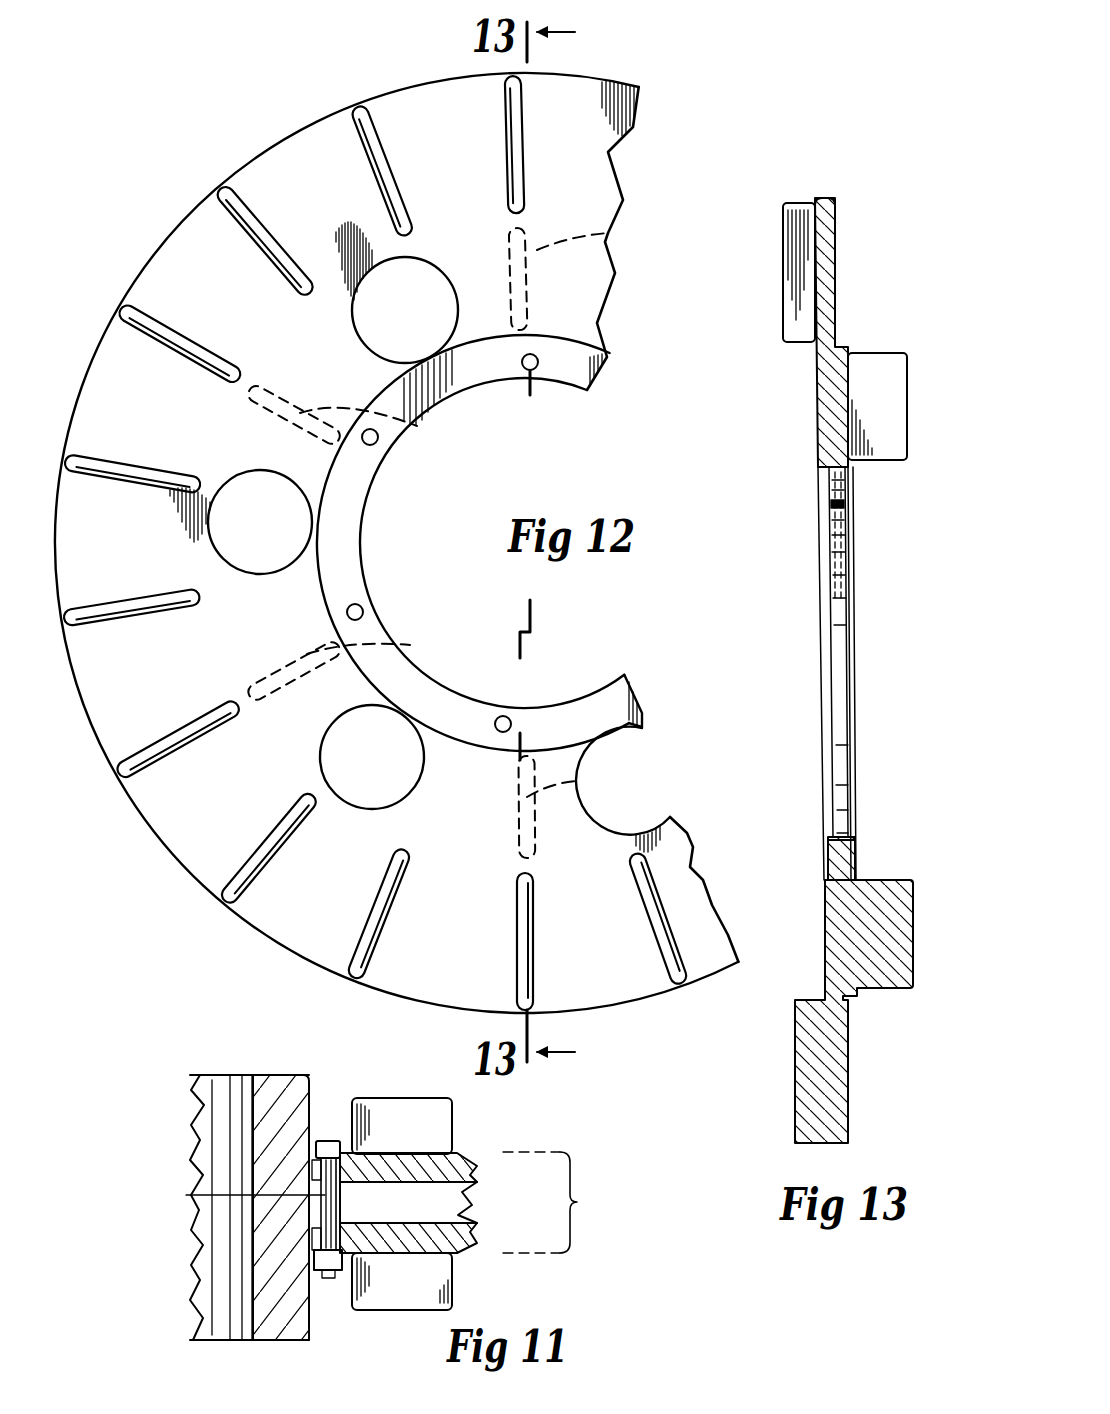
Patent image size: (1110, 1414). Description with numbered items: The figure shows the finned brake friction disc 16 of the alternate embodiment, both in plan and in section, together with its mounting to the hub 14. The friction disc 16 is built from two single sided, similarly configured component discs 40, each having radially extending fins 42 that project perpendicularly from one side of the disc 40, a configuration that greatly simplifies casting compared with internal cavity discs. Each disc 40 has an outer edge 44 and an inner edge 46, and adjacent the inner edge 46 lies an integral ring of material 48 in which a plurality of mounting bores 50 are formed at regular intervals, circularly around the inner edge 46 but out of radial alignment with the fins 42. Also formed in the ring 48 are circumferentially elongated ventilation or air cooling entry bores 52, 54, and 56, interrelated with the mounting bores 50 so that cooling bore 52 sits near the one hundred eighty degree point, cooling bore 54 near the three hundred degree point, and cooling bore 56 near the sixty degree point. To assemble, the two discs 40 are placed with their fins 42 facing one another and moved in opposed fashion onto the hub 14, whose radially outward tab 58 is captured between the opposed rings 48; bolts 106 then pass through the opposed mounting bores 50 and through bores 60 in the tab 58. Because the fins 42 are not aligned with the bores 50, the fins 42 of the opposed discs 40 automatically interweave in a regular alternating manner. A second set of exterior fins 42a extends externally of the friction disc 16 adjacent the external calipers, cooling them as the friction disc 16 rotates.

In FIG. 11, the hub 14 is at (273, 1073).
In FIG. 11, the brake friction disc 16 is at (585, 1202).
In FIG. 12, the component disc 40 is at (268, 128).
In FIG. 13, the component disc 40 is at (857, 181).
In FIG. 12, the fins 42 is at (384, 86).
In FIG. 13, the fins 42 is at (790, 273).
In FIG. 11, the fins 42 is at (480, 1203).
In FIG. 12, the exterior fins 42a is at (610, 236).
In FIG. 13, the exterior fins 42a is at (884, 356).
In FIG. 11, the exterior fins 42a is at (445, 1120).
In FIG. 13, the outer edge 44 is at (827, 197).
In FIG. 12, the inner edge 46 is at (397, 658).
In FIG. 13, the inner edge 46 is at (840, 843).
In FIG. 12, the ring of material 48 is at (342, 564).
In FIG. 13, the ring of material 48 is at (850, 471).
In FIG. 12, the mounting bores 50 is at (534, 369).
In FIG. 13, the mounting bores 50 is at (836, 487).
In FIG. 11, the mounting bores 50 is at (352, 1175).
In FIG. 12, the cooling bore 52 is at (441, 340).
In FIG. 12, the cooling bore 54 is at (313, 506).
In FIG. 12, the cooling bore 56 is at (404, 716).
In FIG. 11, the tab 58 is at (345, 1219).
In FIG. 11, the bores 60 is at (237, 1198).
In FIG. 11, the bolts 106 is at (330, 1140).